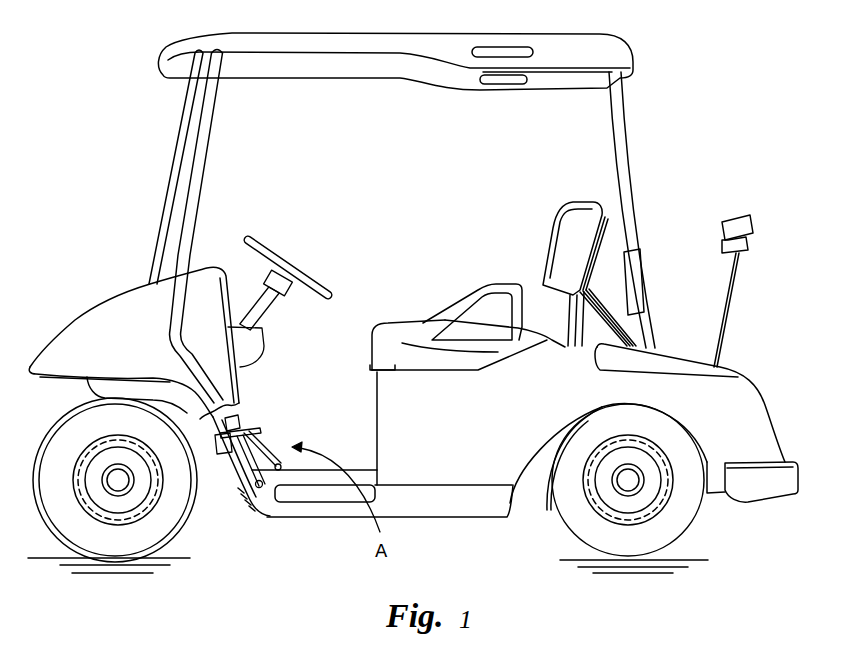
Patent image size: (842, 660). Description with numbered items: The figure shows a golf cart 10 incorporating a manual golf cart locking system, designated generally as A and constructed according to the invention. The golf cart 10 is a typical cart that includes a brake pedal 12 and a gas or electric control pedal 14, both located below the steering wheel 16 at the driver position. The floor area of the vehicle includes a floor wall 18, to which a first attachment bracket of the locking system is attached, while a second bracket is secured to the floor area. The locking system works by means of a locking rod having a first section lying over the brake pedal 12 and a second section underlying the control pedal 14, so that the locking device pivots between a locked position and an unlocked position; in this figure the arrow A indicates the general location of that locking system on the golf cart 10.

The golf cart 10 is at (663, 176).
The brake pedal 12 is at (246, 445).
The gas or electric control pedal 14 is at (272, 436).
The steering wheel 16 is at (262, 242).
The floor wall 18 is at (268, 370).